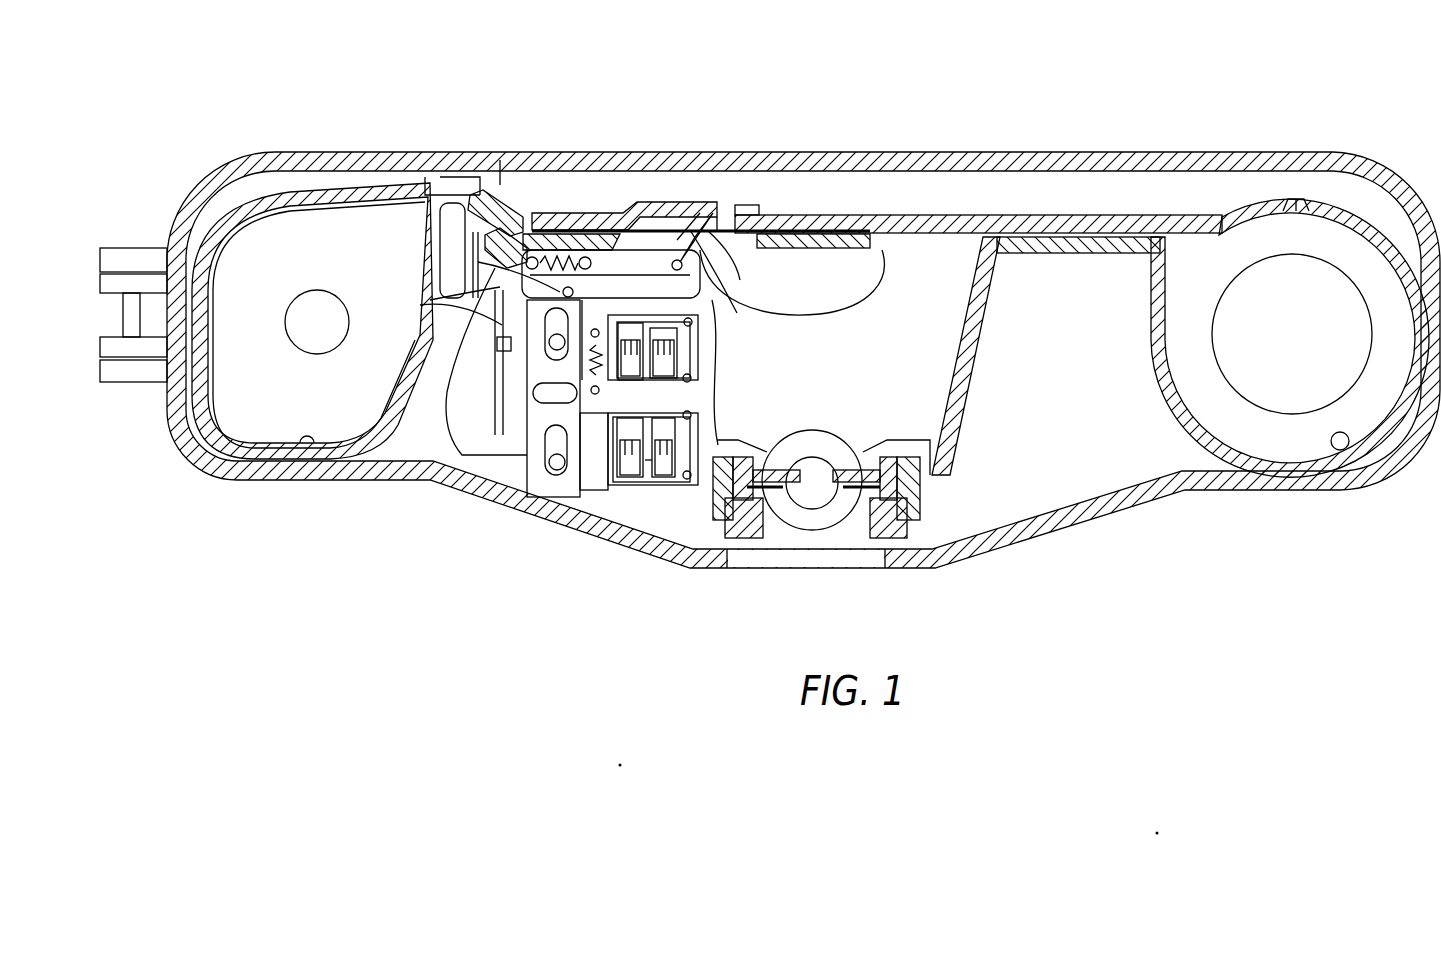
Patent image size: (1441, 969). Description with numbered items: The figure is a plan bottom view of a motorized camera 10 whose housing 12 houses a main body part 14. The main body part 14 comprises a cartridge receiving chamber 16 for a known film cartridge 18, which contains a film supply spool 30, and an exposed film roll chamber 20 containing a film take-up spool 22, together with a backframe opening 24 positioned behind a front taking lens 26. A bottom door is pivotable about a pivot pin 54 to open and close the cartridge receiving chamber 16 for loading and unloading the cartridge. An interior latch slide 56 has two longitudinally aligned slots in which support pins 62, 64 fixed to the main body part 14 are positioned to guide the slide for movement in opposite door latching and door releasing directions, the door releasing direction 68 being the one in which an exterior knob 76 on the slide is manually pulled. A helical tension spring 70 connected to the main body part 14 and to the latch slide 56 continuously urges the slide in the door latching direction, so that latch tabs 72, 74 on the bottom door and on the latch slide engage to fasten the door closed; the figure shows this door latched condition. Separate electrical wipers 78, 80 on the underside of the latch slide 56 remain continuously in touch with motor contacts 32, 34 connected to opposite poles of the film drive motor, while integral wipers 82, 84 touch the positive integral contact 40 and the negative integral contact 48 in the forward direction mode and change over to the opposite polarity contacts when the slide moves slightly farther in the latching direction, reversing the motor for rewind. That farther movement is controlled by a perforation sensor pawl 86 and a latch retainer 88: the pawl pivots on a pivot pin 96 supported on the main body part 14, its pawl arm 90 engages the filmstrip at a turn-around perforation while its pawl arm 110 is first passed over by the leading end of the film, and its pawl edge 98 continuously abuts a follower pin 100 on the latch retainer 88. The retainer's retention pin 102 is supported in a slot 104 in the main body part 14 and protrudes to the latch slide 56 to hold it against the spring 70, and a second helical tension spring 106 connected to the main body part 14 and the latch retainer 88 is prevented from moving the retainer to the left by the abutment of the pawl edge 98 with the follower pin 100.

The motorized camera 10 is at (1132, 92).
The housing 12 is at (1095, 520).
The main body part 14 is at (972, 420).
The cartridge receiving chamber 16 is at (307, 434).
The film cartridge 18 is at (242, 418).
The exposed film roll chamber 20 is at (1356, 451).
The film take-up spool 22 is at (1223, 376).
The backframe opening 24 is at (928, 234).
The front taking lens 26 is at (827, 520).
The film supply spool 30 is at (314, 291).
The motor contact 32 is at (640, 315).
The motor contact 34 is at (712, 330).
The positive integral contact 40 is at (630, 470).
The negative integral contact 48 is at (663, 470).
The pivot pin 54 is at (140, 310).
The latch slide 56 is at (570, 490).
The support pin 62 is at (503, 370).
The support pin 64 is at (540, 432).
The door releasing direction 68 is at (500, 287).
The helical tension spring 70 is at (573, 290).
The latch tab 72 is at (500, 343).
The latch tab 74 is at (446, 304).
The exterior knob 76 is at (545, 395).
The electrical wiper 78 is at (637, 353).
The electrical wiper 80 is at (680, 373).
The electrical wiper 82 is at (597, 418).
The electrical wiper 84 is at (667, 433).
The perforation sensor pawl 86 is at (680, 213).
The latch retainer 88 is at (770, 307).
The pawl arm 90 is at (637, 237).
The pivot pin 96 is at (713, 297).
The pawl edge 98 is at (727, 250).
The follower pin 100 is at (752, 262).
The retention pin 102 is at (503, 280).
The slot 104 is at (503, 250).
The helical tension spring 106 is at (563, 240).
The pawl arm 110 is at (720, 205).